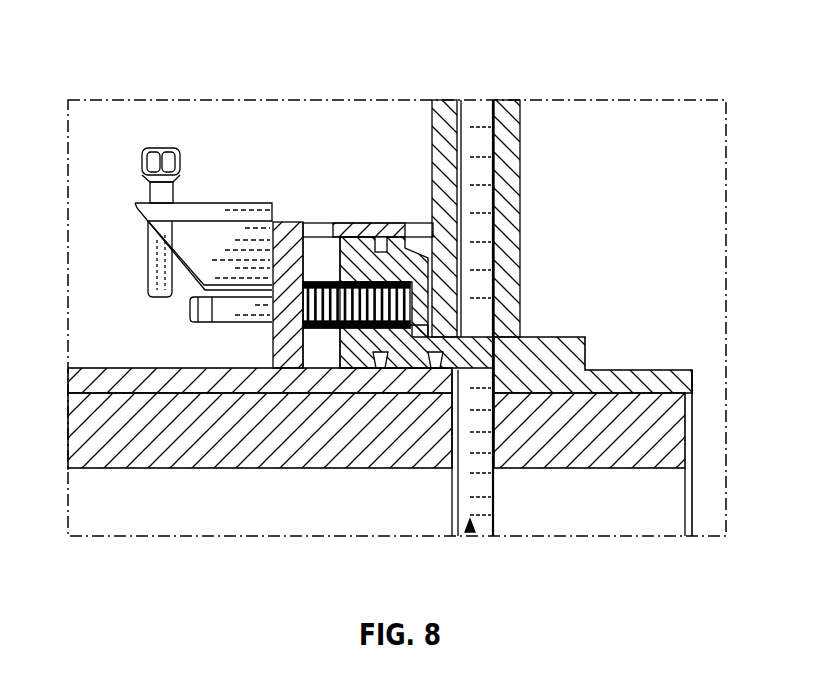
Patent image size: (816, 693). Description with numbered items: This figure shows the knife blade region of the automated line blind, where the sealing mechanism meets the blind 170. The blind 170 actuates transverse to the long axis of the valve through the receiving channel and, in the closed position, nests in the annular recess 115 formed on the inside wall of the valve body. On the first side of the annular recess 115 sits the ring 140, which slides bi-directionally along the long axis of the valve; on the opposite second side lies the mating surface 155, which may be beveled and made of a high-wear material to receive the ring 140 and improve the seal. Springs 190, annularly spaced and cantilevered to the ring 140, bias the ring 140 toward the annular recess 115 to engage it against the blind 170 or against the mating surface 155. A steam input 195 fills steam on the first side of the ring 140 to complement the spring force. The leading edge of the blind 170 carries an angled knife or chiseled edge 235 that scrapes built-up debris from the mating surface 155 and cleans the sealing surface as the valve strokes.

The annular recess 115 is at (470, 528).
The ring 140 is at (407, 362).
The mating surface 155 is at (485, 353).
The blind 170 is at (480, 208).
The spring 190 is at (337, 300).
The steam input 195 is at (417, 228).
The chiseled edge 235 is at (483, 293).